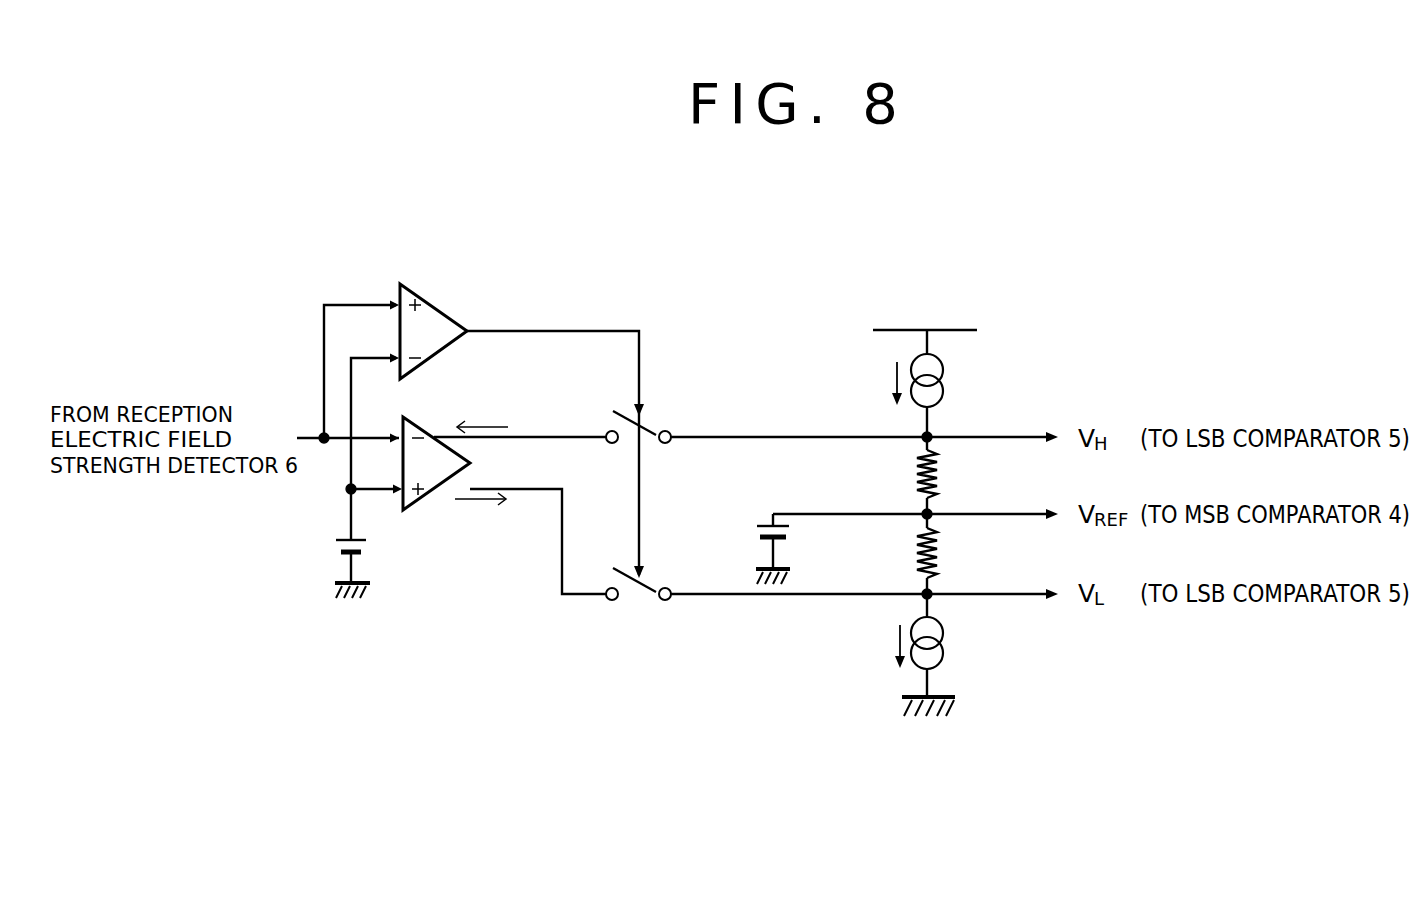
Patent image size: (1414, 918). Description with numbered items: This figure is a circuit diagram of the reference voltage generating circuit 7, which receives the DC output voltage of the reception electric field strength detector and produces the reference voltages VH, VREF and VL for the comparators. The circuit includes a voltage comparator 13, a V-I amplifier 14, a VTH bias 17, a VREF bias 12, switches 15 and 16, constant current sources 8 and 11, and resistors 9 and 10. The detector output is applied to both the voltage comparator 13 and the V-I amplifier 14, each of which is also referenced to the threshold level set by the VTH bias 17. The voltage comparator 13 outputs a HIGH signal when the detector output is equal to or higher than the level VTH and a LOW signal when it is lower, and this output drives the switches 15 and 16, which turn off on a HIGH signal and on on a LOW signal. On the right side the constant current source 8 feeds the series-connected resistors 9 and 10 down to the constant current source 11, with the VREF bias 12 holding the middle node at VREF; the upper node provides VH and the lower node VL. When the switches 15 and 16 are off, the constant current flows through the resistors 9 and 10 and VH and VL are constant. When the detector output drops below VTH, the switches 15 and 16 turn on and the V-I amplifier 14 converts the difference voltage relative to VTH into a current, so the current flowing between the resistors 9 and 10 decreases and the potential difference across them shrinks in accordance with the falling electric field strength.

The reference voltage generating circuit 7 is at (289, 259).
The constant current source 8 is at (946, 379).
The resistor 9 is at (938, 483).
The resistor 10 is at (940, 561).
The constant current source 11 is at (948, 638).
The VREF bias 12 is at (752, 550).
The voltage comparator 13 is at (436, 321).
The V-I amplifier 14 is at (436, 490).
The switch 15 is at (644, 428).
The switch 16 is at (641, 604).
The VTH bias 17 is at (348, 583).